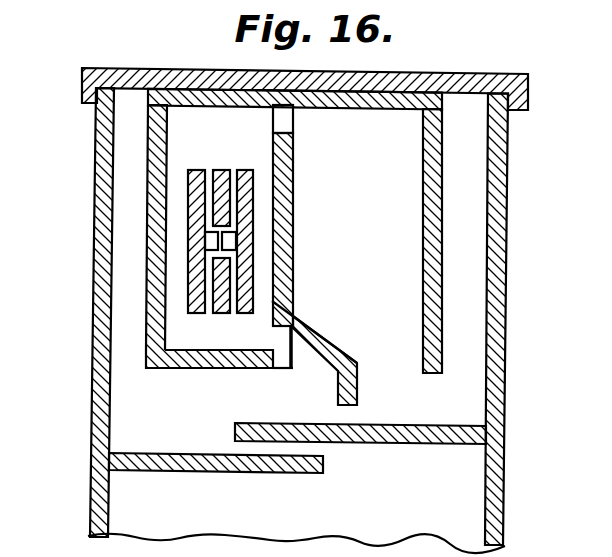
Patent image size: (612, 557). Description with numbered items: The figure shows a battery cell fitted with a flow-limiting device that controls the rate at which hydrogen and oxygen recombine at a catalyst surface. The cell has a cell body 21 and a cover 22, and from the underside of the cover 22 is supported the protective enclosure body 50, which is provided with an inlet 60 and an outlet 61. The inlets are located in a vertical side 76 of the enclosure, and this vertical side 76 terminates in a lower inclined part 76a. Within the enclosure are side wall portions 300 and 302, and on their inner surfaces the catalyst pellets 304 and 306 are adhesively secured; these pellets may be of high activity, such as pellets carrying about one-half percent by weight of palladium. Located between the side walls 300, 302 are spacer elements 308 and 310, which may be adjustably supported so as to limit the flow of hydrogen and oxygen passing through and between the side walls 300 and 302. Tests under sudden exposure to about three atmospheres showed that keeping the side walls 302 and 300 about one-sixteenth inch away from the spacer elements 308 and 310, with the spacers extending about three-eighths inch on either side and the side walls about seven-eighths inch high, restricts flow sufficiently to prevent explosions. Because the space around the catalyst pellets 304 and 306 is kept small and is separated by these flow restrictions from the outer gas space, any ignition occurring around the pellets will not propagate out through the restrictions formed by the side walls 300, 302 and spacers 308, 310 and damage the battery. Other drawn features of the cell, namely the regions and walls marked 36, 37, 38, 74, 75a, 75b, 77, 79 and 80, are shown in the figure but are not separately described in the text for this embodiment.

The cell body 21 is at (93, 358).
The cover 22 is at (447, 84).
The lower chamber 36 is at (131, 422).
The upper chamber 37 is at (330, 217).
The partition wall 38 is at (492, 241).
The protective enclosure body 50 is at (303, 172).
The inlet 60 is at (287, 342).
The outlet 61 is at (294, 122).
The inner top plate 74 is at (352, 93).
The housing left wall 75a is at (148, 137).
The partition wall 75b is at (441, 262).
The vertical side 76 is at (211, 255).
The lower inclined part 76a is at (320, 341).
The housing bottom wall 77 is at (245, 362).
The right shelf 79 is at (397, 434).
The left shelf 80 is at (226, 472).
The side wall portion 300 is at (193, 236).
The side wall portion 302 is at (204, 170).
The pellet 304 is at (255, 222).
The pellet 306 is at (205, 243).
The spacer element 308 is at (224, 170).
The spacer element 310 is at (216, 315).